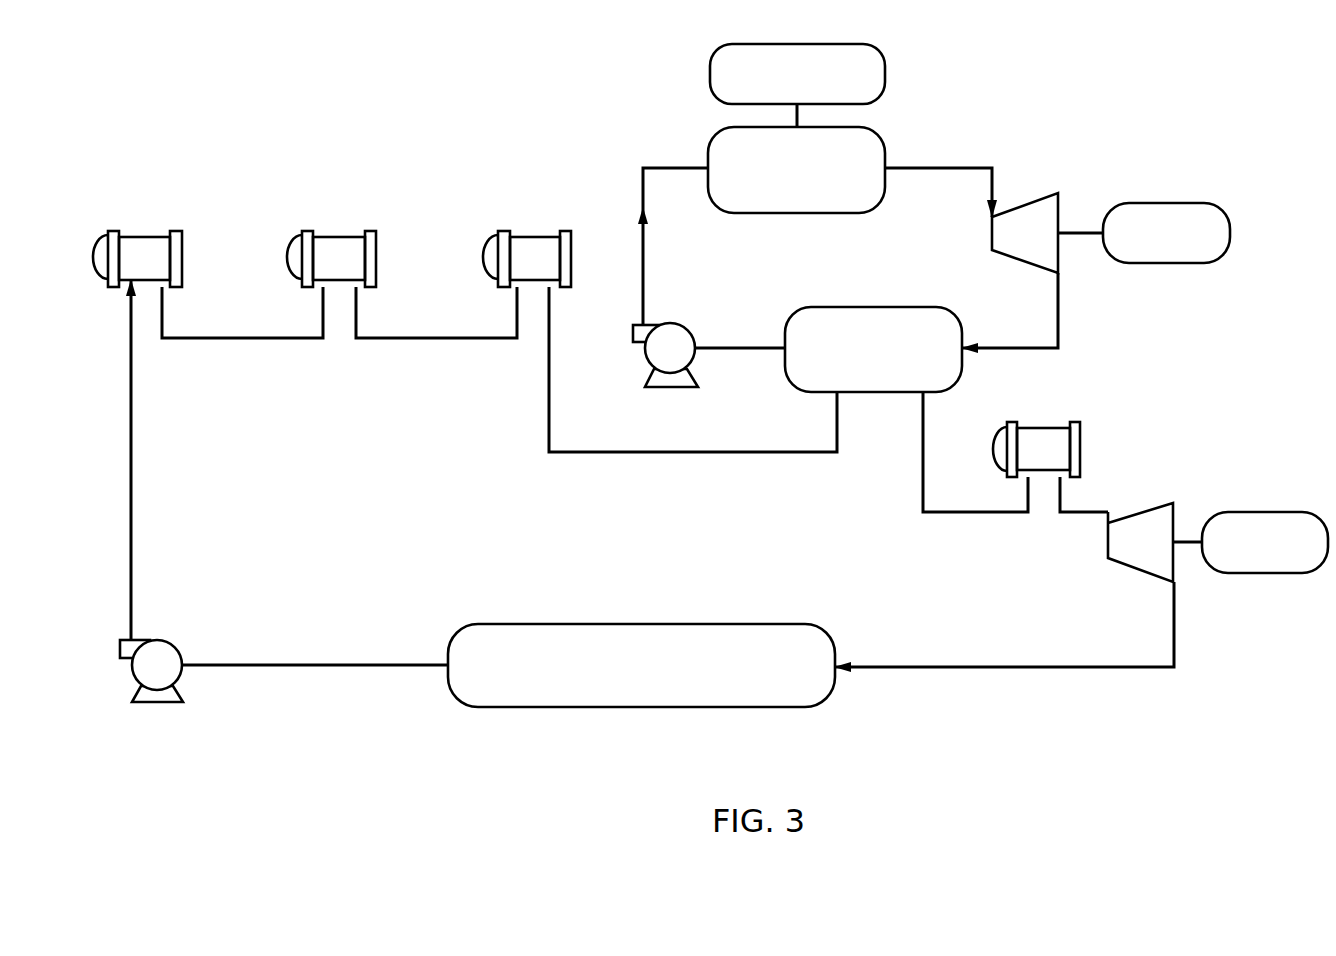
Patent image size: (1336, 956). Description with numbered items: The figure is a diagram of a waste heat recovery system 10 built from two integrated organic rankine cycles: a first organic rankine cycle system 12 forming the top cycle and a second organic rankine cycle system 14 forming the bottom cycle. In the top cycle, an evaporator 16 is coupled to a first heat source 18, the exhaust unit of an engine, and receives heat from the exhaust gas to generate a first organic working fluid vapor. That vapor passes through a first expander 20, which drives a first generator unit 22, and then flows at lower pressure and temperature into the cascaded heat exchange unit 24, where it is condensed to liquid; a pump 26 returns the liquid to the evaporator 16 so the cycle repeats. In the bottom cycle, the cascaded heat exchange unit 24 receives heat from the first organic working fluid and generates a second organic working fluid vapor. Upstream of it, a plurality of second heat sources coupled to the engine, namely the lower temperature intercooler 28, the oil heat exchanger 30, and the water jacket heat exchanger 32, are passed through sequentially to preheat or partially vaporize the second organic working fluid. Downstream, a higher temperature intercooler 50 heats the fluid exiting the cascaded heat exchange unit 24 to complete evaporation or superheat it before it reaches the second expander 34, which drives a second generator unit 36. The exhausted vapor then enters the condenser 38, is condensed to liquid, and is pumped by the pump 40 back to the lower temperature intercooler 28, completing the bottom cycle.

The waste heat recovery system 10 is at (708, 433).
The first organic rankine cycle system 12 is at (932, 222).
The second organic rankine cycle system 14 is at (708, 472).
The evaporator 16 is at (878, 152).
The first heat source 18 is at (886, 72).
The first expander 20 is at (1040, 263).
The first generator unit 22 is at (1195, 203).
The cascaded heat exchange unit 24 is at (852, 307).
The pump 26 is at (678, 329).
The lower temperature intercooler 28 is at (182, 250).
The oil heat exchanger 30 is at (376, 250).
The water jacket heat exchanger 32 is at (486, 256).
The second expander 34 is at (1157, 566).
The second generator unit 36 is at (1268, 512).
The condenser 38 is at (660, 624).
The pump 40 is at (168, 651).
The higher temperature intercooler 50 is at (999, 450).